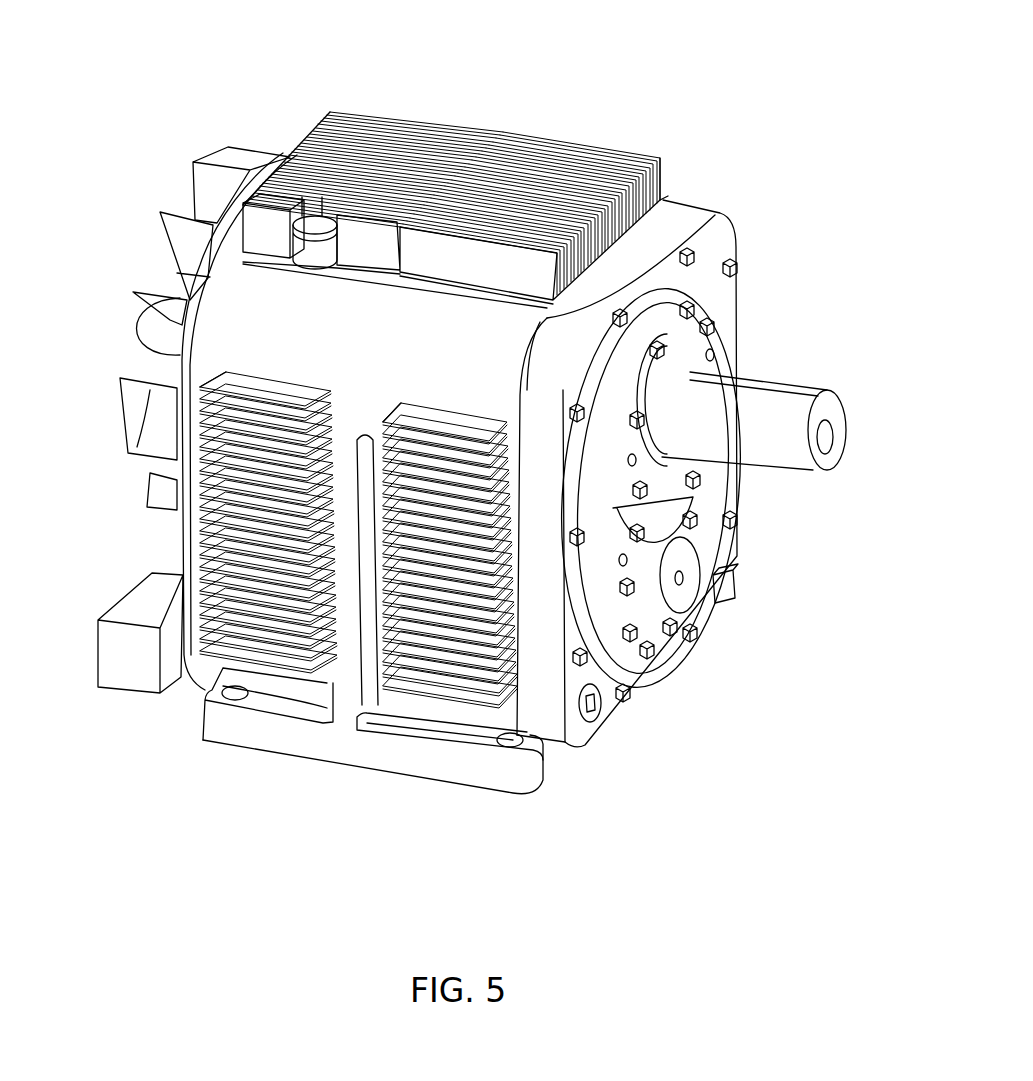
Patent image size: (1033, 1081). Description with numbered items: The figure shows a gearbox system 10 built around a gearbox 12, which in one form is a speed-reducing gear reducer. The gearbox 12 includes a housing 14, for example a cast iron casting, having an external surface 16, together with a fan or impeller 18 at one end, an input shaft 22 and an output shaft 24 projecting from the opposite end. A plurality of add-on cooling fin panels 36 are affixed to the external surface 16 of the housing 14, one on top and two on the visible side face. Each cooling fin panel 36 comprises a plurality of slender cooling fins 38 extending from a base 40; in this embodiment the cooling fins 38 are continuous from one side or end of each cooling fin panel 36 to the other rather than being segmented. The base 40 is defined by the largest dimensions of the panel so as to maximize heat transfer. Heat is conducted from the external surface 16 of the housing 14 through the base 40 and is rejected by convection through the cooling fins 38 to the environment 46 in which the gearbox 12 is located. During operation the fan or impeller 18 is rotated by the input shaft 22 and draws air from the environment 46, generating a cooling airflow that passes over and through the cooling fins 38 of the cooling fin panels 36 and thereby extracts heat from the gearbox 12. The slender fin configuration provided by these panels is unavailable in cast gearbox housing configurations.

The gearbox system 10 is at (692, 43).
The gearbox 12 is at (722, 208).
The housing 14 is at (186, 705).
The external surface 16 is at (384, 385).
The fan or impeller 18 is at (210, 158).
The input shaft 22 is at (132, 341).
The output shaft 24 is at (770, 480).
The cooling fin panel 36 is at (316, 107).
The cooling fins 38 is at (440, 112).
The base 40 is at (378, 272).
The environment 46 is at (384, 63).